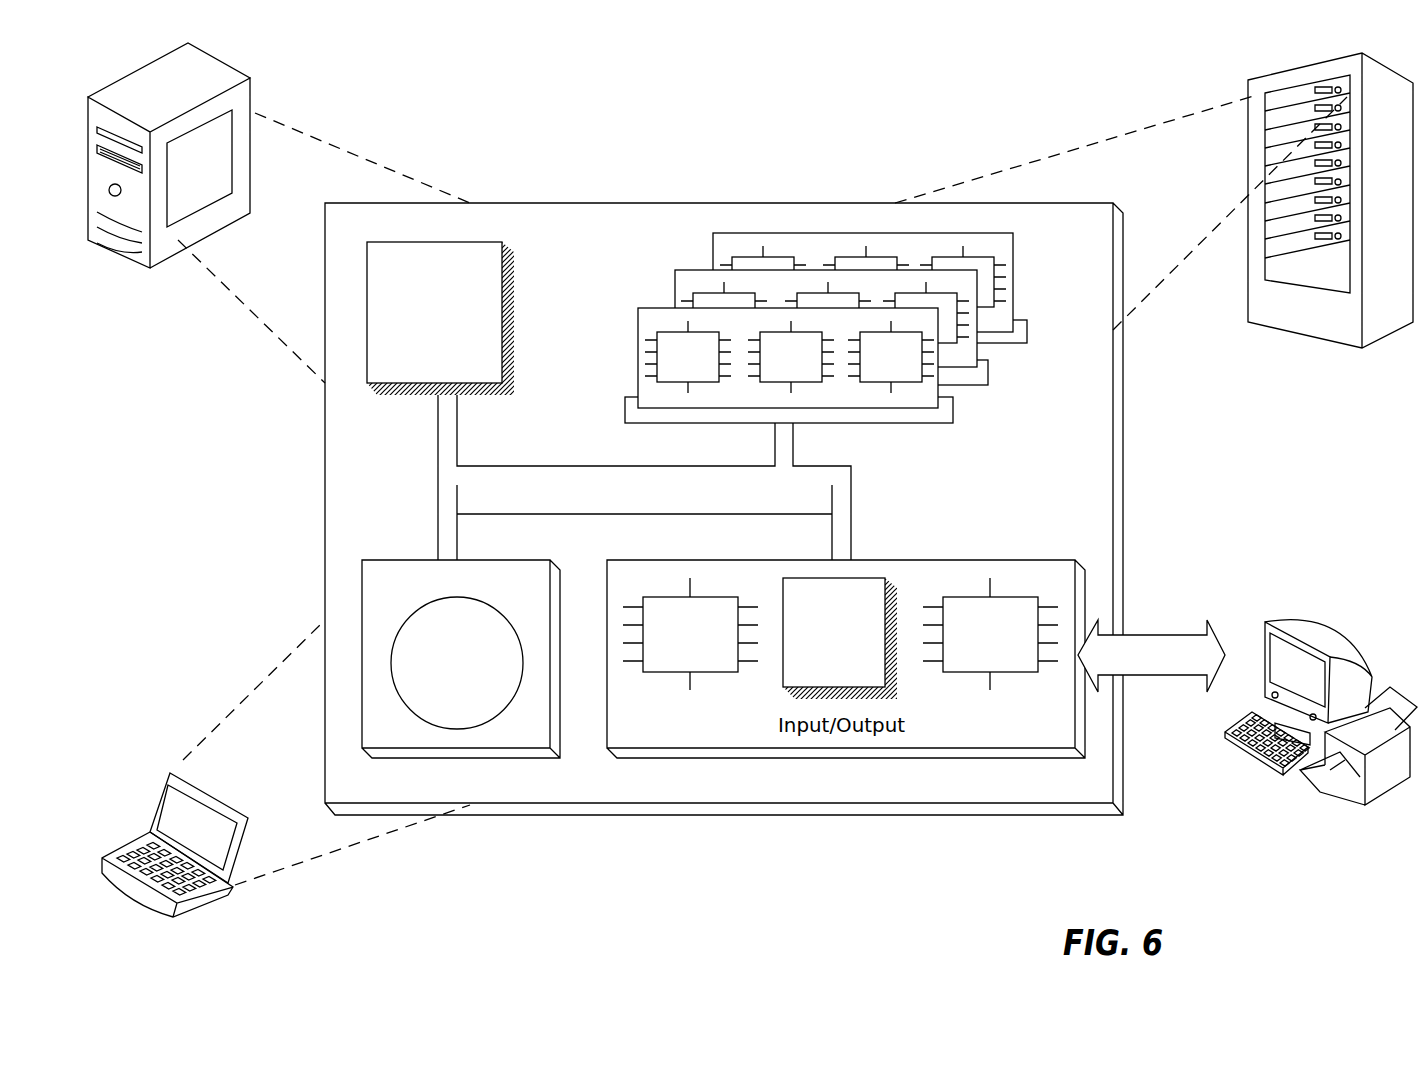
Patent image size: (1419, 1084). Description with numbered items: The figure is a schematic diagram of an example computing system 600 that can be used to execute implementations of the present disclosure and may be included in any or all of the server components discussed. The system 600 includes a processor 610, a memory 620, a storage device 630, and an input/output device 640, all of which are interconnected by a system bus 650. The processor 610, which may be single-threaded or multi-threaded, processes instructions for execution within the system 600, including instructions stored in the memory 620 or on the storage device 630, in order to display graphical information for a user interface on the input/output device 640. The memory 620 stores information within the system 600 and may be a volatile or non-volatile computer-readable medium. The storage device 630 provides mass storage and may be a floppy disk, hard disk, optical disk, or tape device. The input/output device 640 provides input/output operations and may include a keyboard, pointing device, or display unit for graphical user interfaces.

The computing system 600 is at (536, 116).
The processor 610 is at (440, 318).
The memory 620 is at (1018, 381).
The storage device 630 is at (461, 659).
The input/output device 640 is at (1264, 627).
The system bus 650 is at (640, 485).